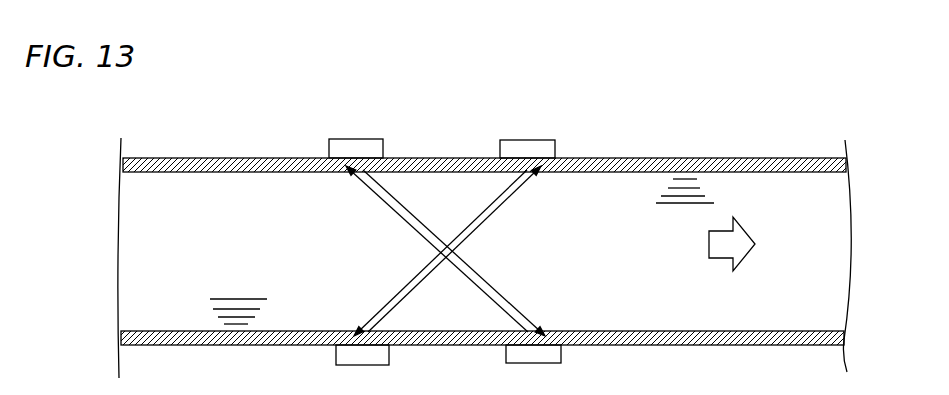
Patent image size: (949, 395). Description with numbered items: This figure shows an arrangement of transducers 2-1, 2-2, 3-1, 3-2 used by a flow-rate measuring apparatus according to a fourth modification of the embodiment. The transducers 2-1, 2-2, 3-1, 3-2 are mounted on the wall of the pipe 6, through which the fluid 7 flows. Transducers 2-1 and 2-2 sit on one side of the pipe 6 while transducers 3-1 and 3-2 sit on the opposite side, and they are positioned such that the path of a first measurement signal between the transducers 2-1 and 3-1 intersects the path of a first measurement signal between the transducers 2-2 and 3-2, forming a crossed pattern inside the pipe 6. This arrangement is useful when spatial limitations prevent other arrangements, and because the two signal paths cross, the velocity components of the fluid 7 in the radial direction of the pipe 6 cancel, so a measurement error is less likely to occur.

The transducer 2-1 is at (328, 153).
The transducer 2-2 is at (335, 355).
The transducer 3-1 is at (561, 354).
The transducer 3-2 is at (555, 150).
The pipe 6 is at (432, 158).
The fluid 7 is at (810, 257).